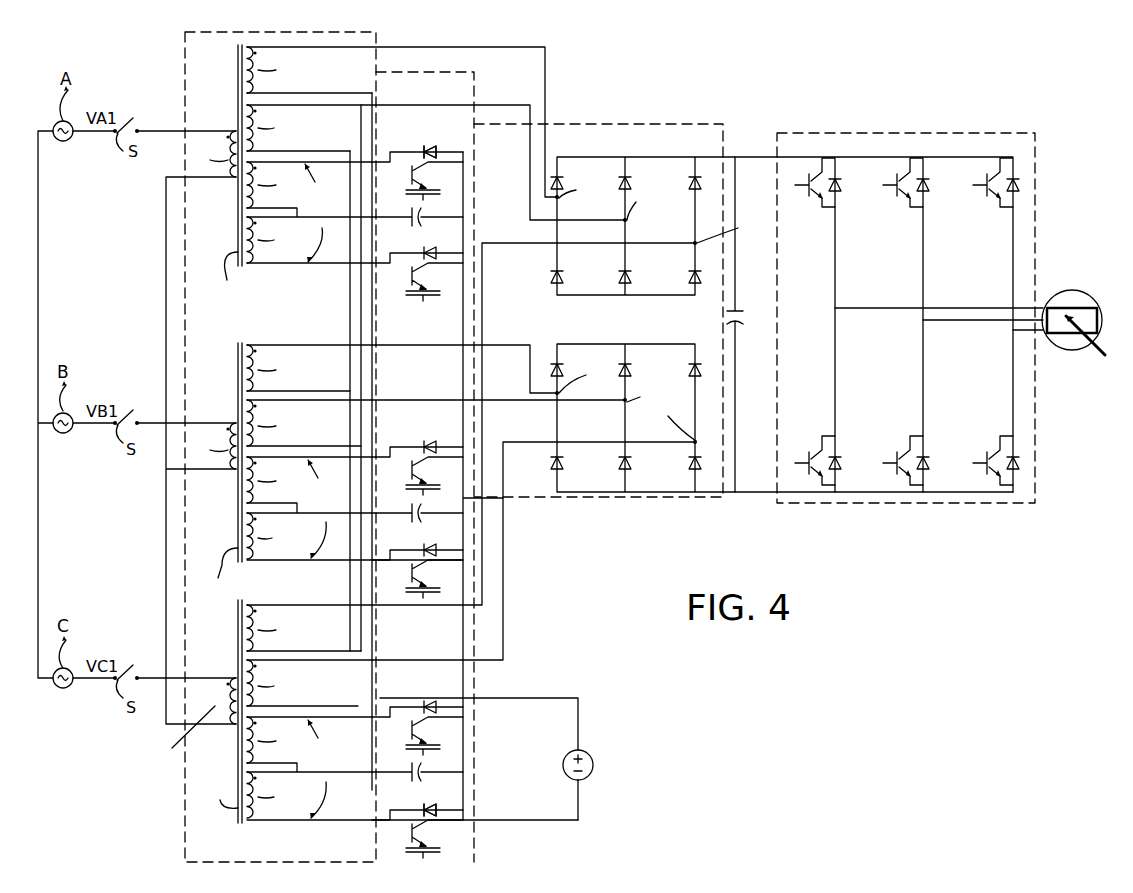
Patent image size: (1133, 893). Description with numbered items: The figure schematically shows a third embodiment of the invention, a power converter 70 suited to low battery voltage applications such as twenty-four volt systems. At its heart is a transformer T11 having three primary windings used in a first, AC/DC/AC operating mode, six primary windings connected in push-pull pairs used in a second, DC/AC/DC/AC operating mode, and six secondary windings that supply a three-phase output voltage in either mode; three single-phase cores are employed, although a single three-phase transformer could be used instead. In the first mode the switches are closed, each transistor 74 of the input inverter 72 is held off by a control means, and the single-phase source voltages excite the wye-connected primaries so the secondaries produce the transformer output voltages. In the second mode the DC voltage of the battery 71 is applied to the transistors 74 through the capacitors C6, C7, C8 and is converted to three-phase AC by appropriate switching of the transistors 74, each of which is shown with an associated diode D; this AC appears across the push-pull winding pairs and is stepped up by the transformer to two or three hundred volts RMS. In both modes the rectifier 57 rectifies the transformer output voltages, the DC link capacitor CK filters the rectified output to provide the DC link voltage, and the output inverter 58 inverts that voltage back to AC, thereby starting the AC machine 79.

The transformer T11 is at (186, 46).
The inverter 72 is at (458, 72).
The transistor 74 is at (412, 830).
The capacitor C6 is at (417, 227).
The capacitor C7 is at (417, 525).
The capacitor C8 is at (417, 783).
The diode D is at (433, 149).
The battery 71 is at (563, 760).
The rectifier 57 is at (632, 122).
The DC link capacitor CK is at (749, 324).
The output inverter 58 is at (803, 132).
The power converter 70 is at (988, 123).
The AC machine 79 is at (1058, 292).